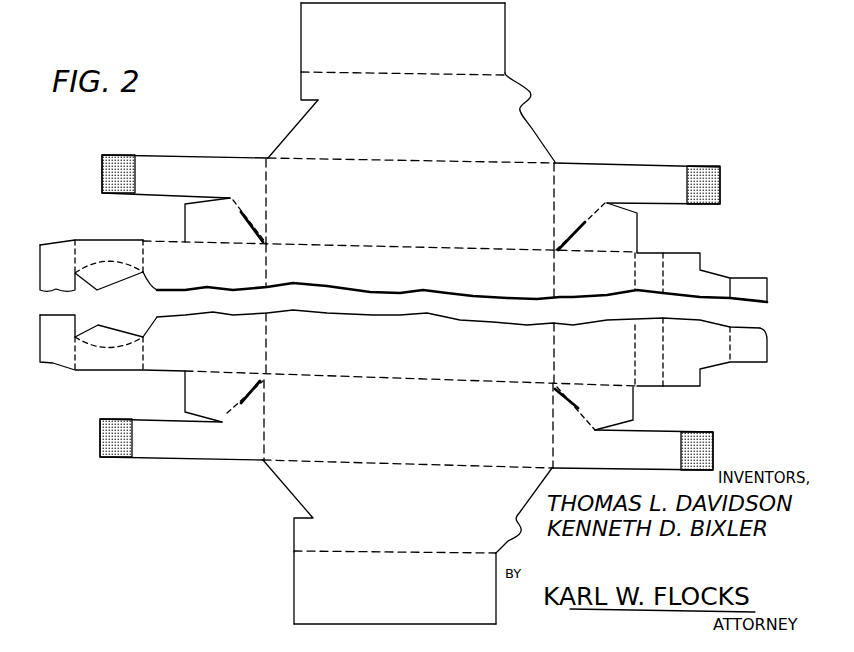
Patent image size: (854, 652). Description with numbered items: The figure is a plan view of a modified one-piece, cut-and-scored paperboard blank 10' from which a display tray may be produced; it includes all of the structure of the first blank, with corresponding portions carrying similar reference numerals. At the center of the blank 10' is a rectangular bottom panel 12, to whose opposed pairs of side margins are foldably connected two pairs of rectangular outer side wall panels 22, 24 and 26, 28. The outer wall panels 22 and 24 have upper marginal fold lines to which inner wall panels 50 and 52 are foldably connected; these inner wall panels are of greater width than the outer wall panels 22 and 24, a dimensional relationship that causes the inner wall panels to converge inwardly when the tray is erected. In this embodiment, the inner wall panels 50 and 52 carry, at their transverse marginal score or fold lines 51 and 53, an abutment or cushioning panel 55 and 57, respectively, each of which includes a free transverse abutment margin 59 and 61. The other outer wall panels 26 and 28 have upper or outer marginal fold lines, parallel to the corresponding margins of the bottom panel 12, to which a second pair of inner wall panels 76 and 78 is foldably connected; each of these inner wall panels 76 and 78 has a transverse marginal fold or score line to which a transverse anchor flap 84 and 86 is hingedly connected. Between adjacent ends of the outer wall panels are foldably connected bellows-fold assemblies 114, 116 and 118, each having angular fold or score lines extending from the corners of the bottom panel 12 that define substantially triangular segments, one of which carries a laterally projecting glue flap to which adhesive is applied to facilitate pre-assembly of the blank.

The blank 10' is at (413, 250).
The bottom panel 12 is at (433, 284).
The outer side wall panel 22 is at (423, 220).
The outer side wall panel 24 is at (433, 434).
The outer side wall panel 26 is at (234, 350).
The outer side wall panel 28 is at (601, 285).
The inner wall panel 50 is at (432, 128).
The transverse marginal score or fold line 51 is at (390, 75).
The inner wall panel 52 is at (423, 512).
The transverse marginal score or fold line 53 is at (378, 551).
The abutment or cushioning panel 55 is at (415, 49).
The abutment or cushioning panel 57 is at (425, 598).
The free transverse abutment margin 59 is at (500, 5).
The free transverse abutment margin 61 is at (294, 624).
The inner wall panel 76 is at (110, 260).
The inner wall panel 78 is at (694, 282).
The transverse anchor flap 84 is at (52, 352).
The transverse anchor flap 86 is at (757, 350).
The bellows-fold assembly 114 is at (223, 150).
The bellows-fold assembly 116 is at (628, 161).
The bellows-fold assembly 118 is at (203, 463).